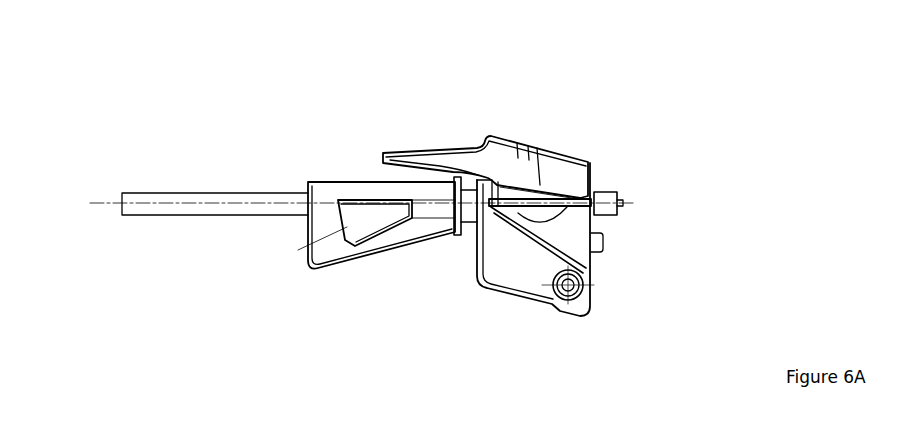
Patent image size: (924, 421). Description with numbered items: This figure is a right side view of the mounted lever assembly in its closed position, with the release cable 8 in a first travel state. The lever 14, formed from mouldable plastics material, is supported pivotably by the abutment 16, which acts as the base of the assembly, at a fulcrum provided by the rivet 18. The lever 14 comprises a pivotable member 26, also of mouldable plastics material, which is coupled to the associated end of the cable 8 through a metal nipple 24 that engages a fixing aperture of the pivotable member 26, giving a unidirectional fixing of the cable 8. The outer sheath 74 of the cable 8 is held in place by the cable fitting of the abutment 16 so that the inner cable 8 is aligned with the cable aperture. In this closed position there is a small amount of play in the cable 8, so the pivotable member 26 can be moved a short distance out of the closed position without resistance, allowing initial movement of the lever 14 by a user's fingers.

The lever 14 is at (507, 96).
The pivotable member 26 is at (548, 162).
The nipple 24 is at (598, 194).
The cable 8 is at (613, 199).
The outer sheath 74 is at (173, 202).
The abutment 16 is at (477, 304).
The rivet 18 is at (566, 306).